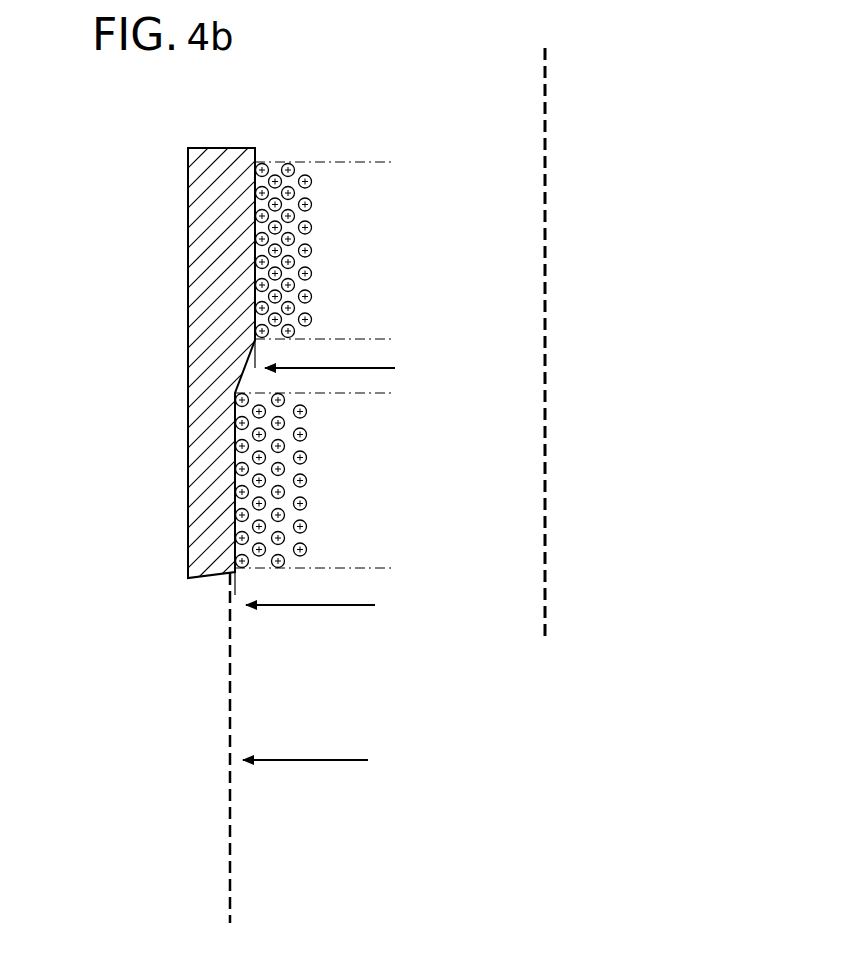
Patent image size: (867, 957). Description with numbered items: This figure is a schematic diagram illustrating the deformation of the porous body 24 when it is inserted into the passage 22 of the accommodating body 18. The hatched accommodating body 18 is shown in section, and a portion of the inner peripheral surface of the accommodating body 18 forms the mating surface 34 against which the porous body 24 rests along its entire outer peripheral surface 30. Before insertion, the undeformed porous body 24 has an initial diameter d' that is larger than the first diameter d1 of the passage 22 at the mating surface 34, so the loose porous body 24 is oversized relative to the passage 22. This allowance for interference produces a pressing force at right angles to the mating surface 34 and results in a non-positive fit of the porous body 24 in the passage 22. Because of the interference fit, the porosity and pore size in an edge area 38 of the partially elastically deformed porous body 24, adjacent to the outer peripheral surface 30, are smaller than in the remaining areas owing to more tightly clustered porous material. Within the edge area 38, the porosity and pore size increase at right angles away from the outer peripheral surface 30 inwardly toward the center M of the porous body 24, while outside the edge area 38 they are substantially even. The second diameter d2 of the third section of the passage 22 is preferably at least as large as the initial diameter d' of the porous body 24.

The accommodating body 18 is at (172, 275).
The passage 22 is at (609, 150).
The porous body 24 is at (340, 185).
The outer peripheral surface 30 is at (257, 220).
The mating surface 34 is at (257, 260).
The edge area 38 is at (276, 148).
The center M is at (547, 610).
The first diameter d1 is at (367, 367).
The initial diameter d' is at (320, 748).
The second diameter d2 is at (305, 760).